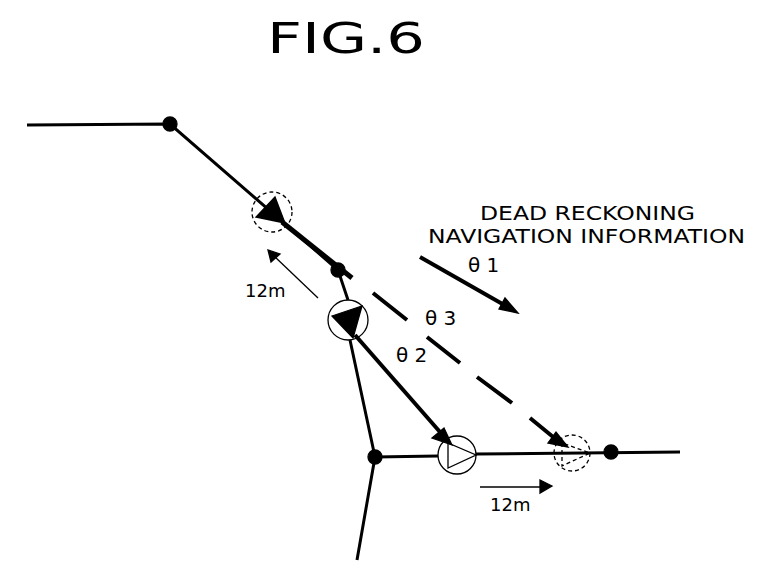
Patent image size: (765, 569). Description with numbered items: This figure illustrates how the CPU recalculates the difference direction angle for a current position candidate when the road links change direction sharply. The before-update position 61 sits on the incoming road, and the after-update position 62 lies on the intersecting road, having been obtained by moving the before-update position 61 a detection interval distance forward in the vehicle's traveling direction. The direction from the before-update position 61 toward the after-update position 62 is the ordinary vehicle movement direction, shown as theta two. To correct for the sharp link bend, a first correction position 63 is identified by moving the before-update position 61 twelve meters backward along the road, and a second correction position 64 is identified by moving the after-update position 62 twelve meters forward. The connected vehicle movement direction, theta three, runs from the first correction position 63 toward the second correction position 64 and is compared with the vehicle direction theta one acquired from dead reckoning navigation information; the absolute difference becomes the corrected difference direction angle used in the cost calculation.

The before-update position 61 is at (330, 330).
The after-update position 62 is at (455, 474).
The first correction position 63 is at (267, 223).
The second correction position 64 is at (575, 473).